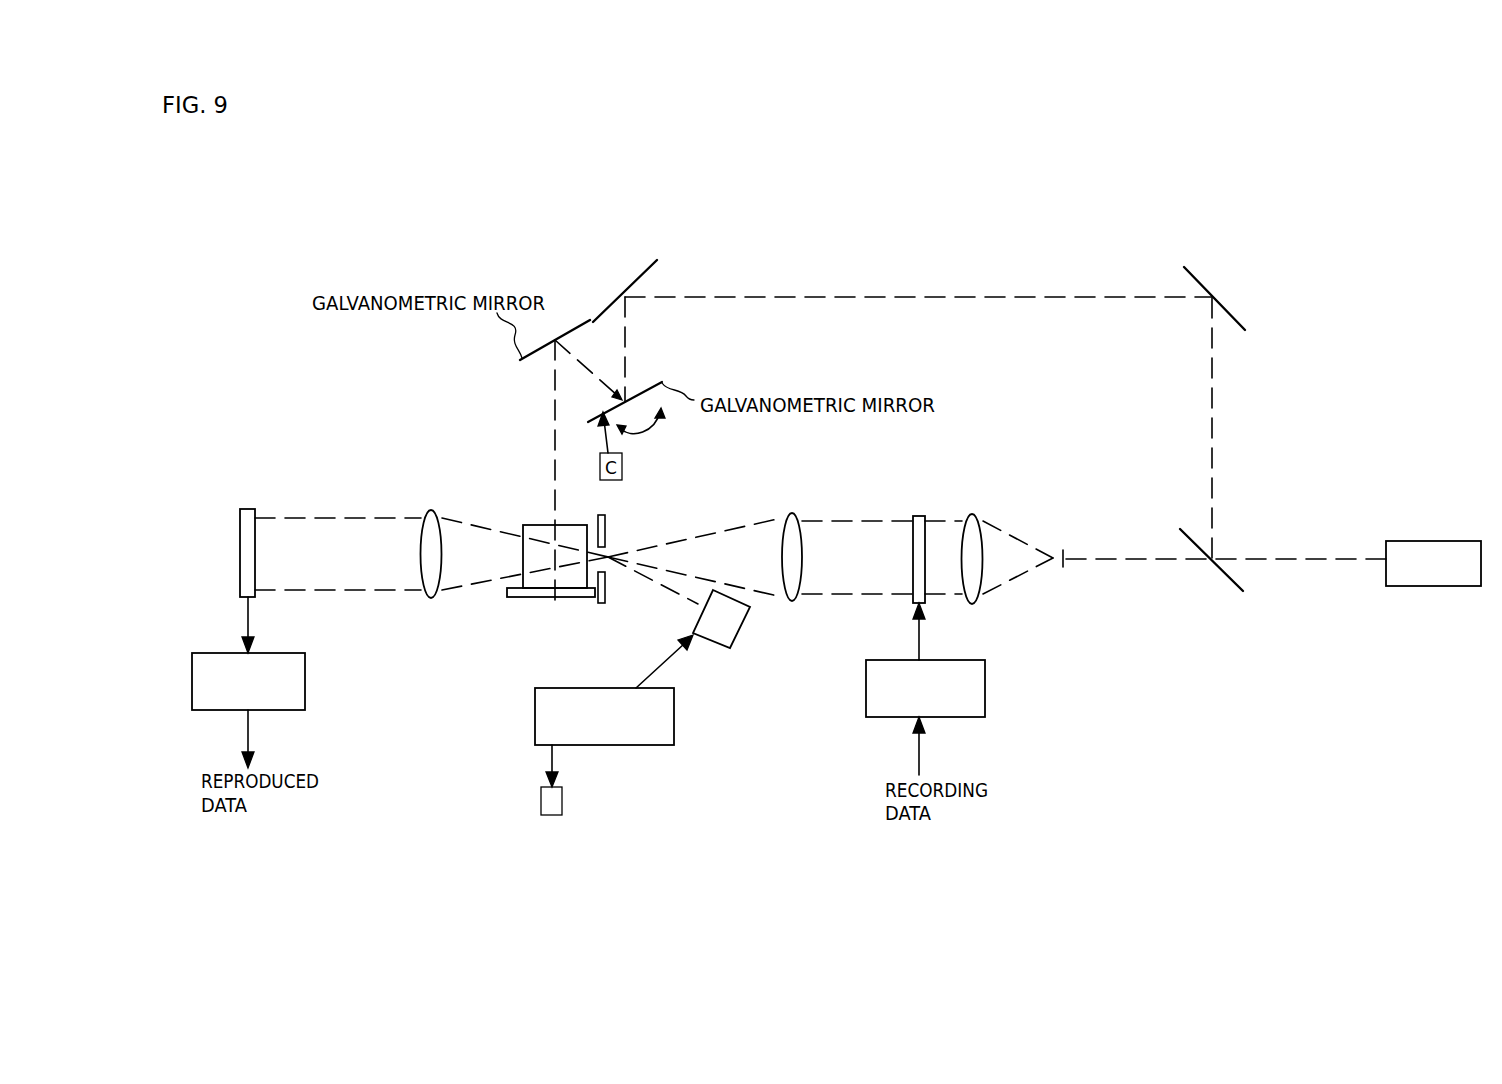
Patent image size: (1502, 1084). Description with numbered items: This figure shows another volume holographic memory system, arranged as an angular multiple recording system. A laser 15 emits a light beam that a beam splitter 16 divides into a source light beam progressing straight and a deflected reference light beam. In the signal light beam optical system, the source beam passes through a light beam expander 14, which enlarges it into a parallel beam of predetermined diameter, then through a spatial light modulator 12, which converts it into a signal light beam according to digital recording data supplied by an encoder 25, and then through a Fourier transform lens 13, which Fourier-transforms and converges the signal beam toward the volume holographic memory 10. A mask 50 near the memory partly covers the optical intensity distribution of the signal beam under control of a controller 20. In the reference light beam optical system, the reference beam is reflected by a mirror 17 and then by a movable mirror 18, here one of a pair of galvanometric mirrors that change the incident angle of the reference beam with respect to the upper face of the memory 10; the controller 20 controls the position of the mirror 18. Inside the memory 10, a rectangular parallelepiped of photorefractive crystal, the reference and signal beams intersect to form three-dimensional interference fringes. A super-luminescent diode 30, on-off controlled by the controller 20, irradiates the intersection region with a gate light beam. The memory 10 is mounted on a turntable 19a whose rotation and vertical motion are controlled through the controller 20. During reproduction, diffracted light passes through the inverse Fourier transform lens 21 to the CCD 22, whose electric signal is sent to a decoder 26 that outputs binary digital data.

The volume holographic memory 10 is at (537, 528).
The spatial light modulator 12 is at (919, 515).
The Fourier transform lens 13 is at (800, 600).
The light beam expander 14 is at (1020, 576).
The laser 15 is at (1436, 588).
The beam splitter 16 is at (1228, 576).
The mirror 17 is at (1188, 270).
The movable mirror 18 is at (656, 262).
The turntable 19a is at (518, 598).
The controller 20 is at (645, 747).
The inverse Fourier transform lens 21 is at (432, 509).
The CCD 22 is at (247, 507).
The encoder 25 is at (986, 680).
The decoder 26 is at (306, 683).
The super-luminescent diode 30 is at (731, 650).
The mask 50 is at (602, 604).